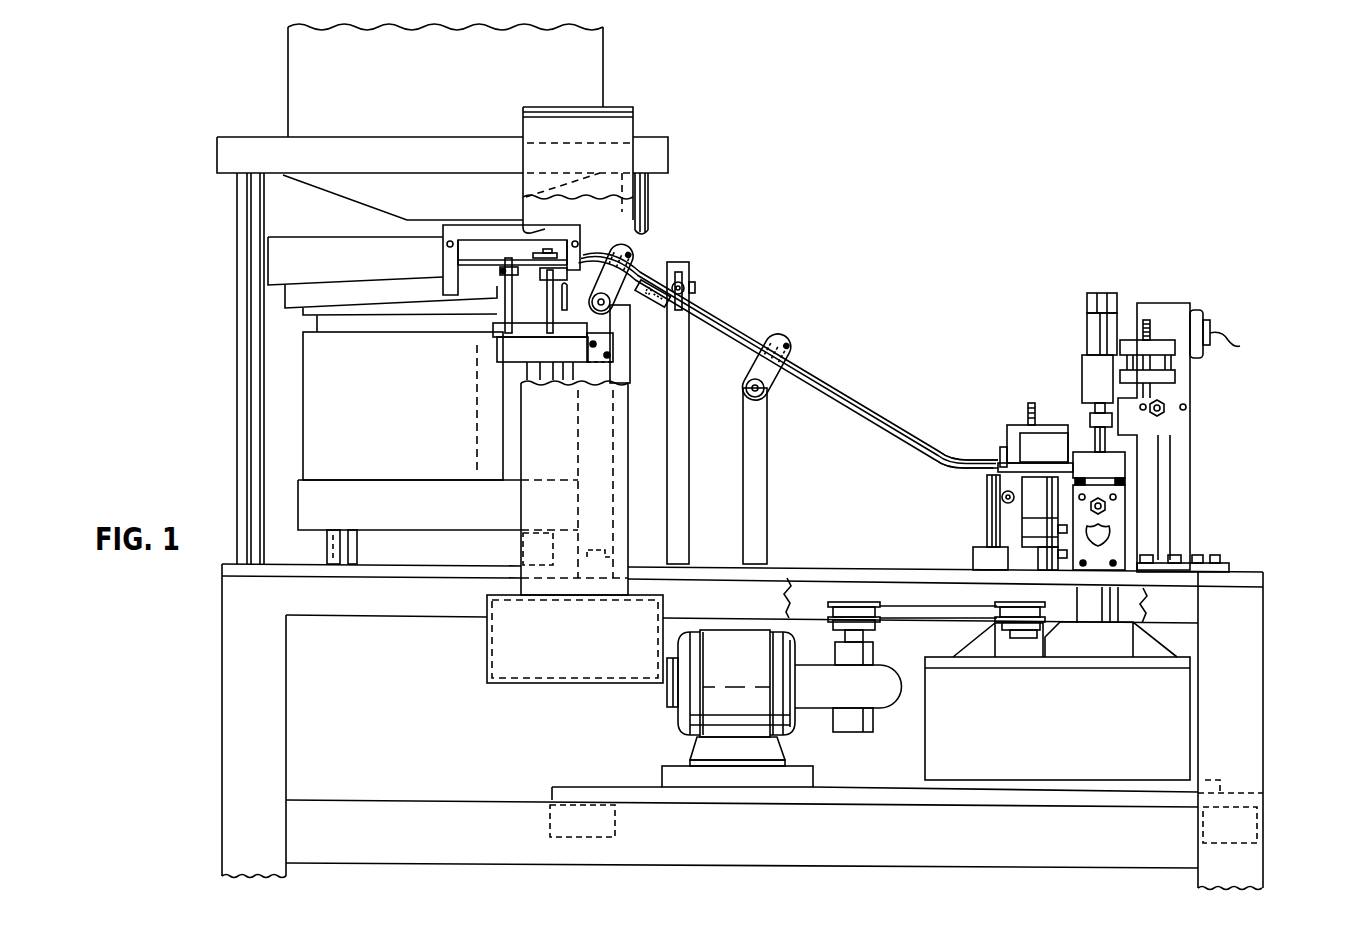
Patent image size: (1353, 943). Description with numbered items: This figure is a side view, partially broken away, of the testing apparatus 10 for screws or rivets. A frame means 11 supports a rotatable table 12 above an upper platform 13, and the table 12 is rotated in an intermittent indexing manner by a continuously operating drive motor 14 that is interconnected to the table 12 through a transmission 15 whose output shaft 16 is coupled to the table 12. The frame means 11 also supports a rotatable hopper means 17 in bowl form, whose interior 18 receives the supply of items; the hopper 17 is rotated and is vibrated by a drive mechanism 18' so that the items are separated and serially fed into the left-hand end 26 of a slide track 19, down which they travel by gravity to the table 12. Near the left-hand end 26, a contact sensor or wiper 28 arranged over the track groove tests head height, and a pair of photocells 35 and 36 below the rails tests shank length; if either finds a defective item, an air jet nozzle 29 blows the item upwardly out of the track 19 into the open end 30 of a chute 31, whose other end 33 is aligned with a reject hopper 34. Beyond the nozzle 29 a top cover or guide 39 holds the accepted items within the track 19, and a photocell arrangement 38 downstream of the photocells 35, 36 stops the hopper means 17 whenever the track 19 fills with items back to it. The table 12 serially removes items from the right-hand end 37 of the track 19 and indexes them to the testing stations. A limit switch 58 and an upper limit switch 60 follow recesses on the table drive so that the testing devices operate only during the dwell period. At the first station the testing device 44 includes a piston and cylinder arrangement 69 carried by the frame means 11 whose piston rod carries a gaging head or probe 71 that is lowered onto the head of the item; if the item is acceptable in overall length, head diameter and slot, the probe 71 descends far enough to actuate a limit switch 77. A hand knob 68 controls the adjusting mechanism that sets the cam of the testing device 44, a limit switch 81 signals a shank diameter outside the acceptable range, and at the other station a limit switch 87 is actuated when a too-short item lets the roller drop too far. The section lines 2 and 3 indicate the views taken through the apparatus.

The testing apparatus 10 is at (1086, 194).
The frame means 11 is at (1247, 692).
The rotatable table 12 is at (1064, 440).
The upper platform 13 is at (1246, 572).
The drive motor 14 is at (815, 692).
The transmission 15 is at (1085, 765).
The output shaft 16 is at (1105, 601).
The rotatable hopper means 17 is at (603, 60).
The interior 18 is at (427, 350).
The drive mechanism 18' is at (353, 448).
The slide track 19 is at (845, 415).
The section line 2- 2 is at (190, 218).
The section line 3- 3 is at (1000, 445).
The left-hand end 26 is at (606, 242).
The contact sensor or wiper 28 is at (541, 256).
The air jet nozzle 29 is at (572, 293).
The open end 30 is at (543, 251).
The chute 31 is at (636, 118).
The other end 33 is at (520, 590).
The reject hopper 34 is at (561, 665).
The photocell 35 is at (503, 276).
The photocell 36 is at (537, 267).
The right-hand end 37 is at (980, 478).
The photocell arrangement 38 is at (657, 278).
The top cover or guide 39 is at (836, 400).
The testing device 44 is at (1075, 356).
The limit switch 58 is at (1028, 551).
The upper limit switch 60 is at (1030, 530).
The hand knob 68 is at (1110, 535).
The piston and cylinder arrangement 69 is at (1095, 325).
The gaging head or probe 71 is at (1097, 423).
The limit switch 77 is at (1040, 440).
The limit switch 81 is at (1120, 461).
The limit switch 87 is at (1173, 313).